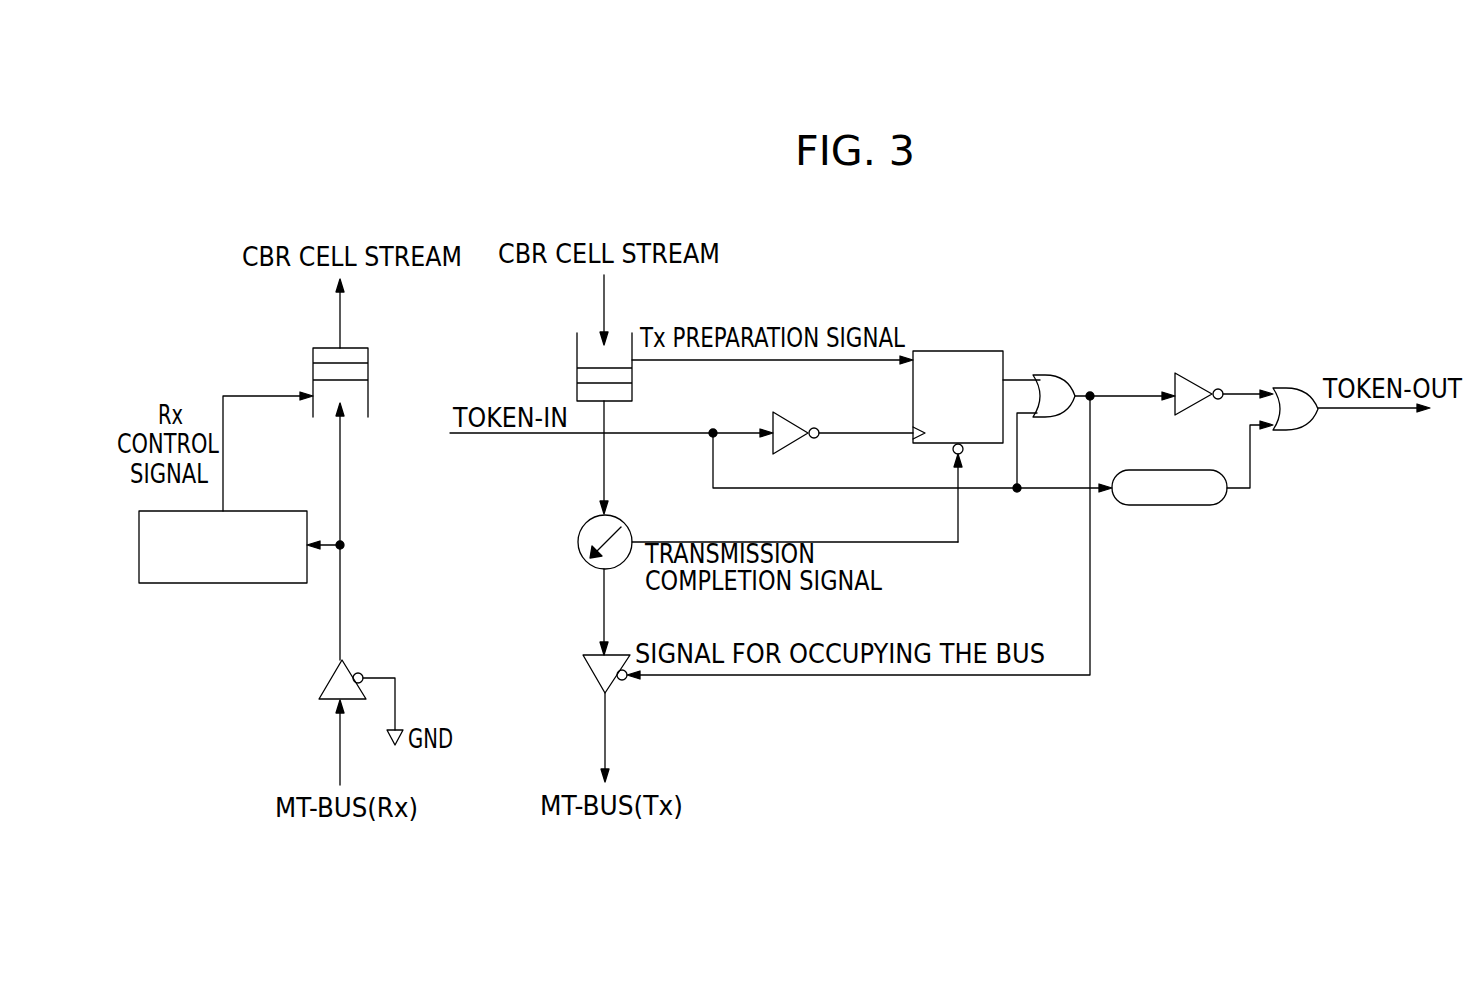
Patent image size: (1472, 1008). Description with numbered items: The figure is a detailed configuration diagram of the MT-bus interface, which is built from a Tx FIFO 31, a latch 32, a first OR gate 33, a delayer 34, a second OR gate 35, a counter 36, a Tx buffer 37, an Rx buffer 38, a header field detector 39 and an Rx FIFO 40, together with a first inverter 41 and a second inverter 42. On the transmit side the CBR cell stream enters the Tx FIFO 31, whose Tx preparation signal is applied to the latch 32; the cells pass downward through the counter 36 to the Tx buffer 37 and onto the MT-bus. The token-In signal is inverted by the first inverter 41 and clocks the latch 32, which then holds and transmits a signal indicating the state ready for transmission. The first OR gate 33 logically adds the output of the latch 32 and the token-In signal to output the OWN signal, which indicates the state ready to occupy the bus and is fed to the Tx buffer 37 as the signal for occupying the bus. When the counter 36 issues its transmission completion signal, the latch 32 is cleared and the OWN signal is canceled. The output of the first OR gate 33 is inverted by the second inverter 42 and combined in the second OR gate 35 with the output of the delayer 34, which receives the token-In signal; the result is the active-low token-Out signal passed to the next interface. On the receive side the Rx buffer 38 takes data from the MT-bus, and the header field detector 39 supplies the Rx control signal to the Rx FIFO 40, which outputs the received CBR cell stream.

The Tx FIFO 31 is at (620, 337).
The latch 32 is at (972, 351).
The first OR gate 33 is at (1058, 373).
The delayer 34 is at (1172, 470).
The second OR gate 35 is at (1292, 388).
The counter 36 is at (622, 522).
The Tx buffer 37 is at (592, 668).
The Rx buffer 38 is at (326, 675).
The header field detector 39 is at (274, 511).
The Rx FIFO 40 is at (357, 348).
The first inverter 41 is at (790, 412).
The second inverter 42 is at (1195, 372).